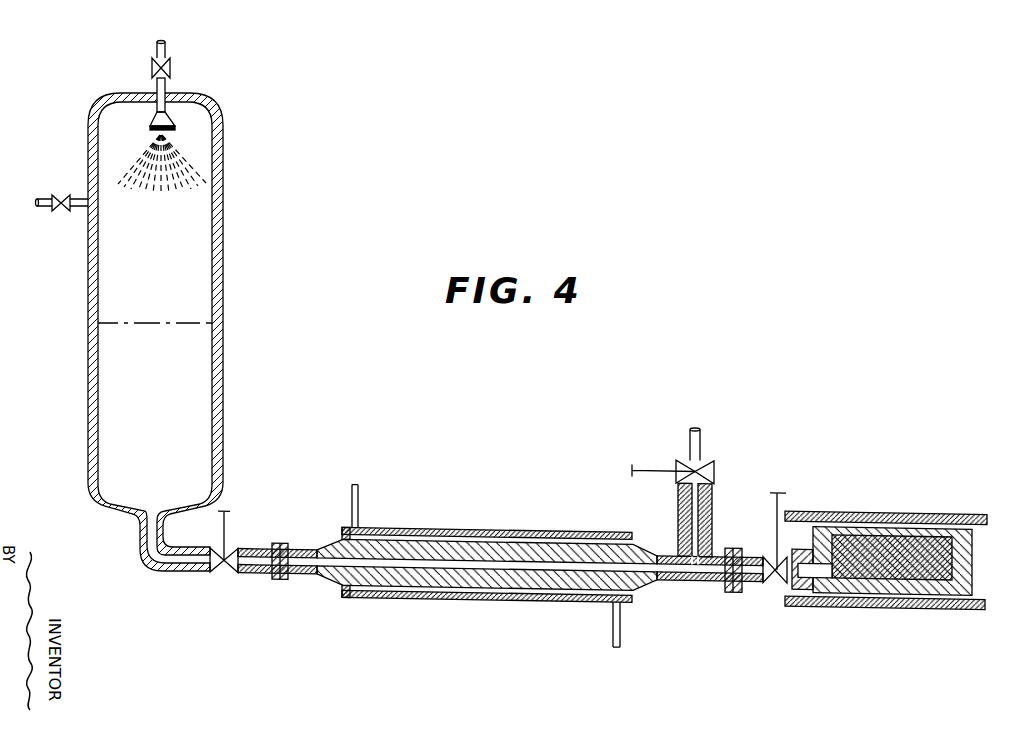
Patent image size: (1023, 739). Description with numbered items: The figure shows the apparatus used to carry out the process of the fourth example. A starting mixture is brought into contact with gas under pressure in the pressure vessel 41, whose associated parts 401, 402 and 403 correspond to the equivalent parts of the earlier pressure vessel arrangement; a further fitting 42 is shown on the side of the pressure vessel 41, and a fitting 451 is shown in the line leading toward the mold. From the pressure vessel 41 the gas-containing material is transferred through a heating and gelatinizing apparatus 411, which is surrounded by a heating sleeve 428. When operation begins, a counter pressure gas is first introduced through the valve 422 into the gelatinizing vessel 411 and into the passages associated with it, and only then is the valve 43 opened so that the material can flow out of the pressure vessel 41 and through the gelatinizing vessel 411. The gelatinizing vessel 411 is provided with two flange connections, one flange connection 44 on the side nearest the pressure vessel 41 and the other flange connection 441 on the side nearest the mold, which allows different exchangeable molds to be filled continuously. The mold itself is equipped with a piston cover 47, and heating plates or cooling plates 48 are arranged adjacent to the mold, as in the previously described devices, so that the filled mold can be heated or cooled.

The pressure vessel 41 is at (223, 305).
The side outlet pipe with valve 42 is at (58, 212).
The valve 43 is at (236, 575).
The flange connection 44 is at (275, 581).
The piston cover 47 is at (973, 549).
The heating plates or cooling plates 48 is at (895, 500).
The part 401 is at (167, 50).
The part 402 is at (172, 72).
The part 403 is at (170, 127).
The heating and gelatinizing apparatus 411 is at (422, 579).
The valve 422 is at (712, 450).
The heating sleeve 428 is at (432, 525).
The flange connection 441 is at (726, 582).
The valve 451 is at (783, 572).